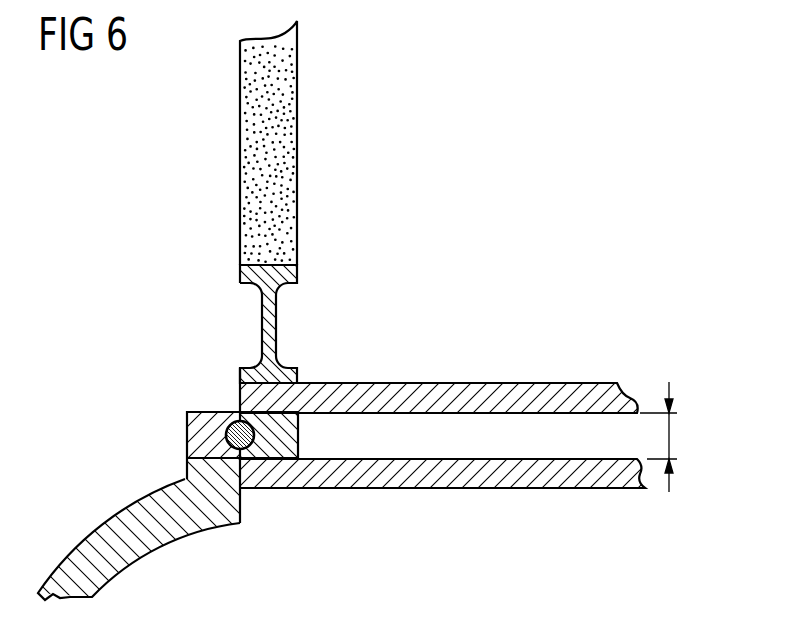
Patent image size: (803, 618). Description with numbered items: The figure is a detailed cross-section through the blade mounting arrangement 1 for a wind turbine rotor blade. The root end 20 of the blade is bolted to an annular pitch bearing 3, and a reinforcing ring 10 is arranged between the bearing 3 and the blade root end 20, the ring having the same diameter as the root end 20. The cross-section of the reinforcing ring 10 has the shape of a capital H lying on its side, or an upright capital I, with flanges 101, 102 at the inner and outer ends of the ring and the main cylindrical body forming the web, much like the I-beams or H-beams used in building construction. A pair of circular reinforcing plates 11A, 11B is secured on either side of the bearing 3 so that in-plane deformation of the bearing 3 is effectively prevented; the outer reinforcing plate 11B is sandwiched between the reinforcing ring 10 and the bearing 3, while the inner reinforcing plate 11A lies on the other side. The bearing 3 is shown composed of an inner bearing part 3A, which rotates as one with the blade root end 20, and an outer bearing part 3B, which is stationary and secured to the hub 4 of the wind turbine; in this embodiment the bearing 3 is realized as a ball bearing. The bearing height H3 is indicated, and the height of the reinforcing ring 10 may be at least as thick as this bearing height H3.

The blade mounting arrangement 1 is at (549, 124).
The root end 20 is at (250, 137).
The flange 101 is at (288, 277).
The reinforcing ring 10 is at (266, 318).
The flange 102 is at (290, 377).
The outer reinforcing plate 11B is at (527, 393).
The inner reinforcing plate 11A is at (545, 480).
The annular pitch bearing 3 is at (190, 428).
The outer bearing part 3B is at (202, 417).
The inner bearing part 3A is at (287, 435).
The hub 4 is at (118, 515).
The bearing height H3 is at (669, 435).